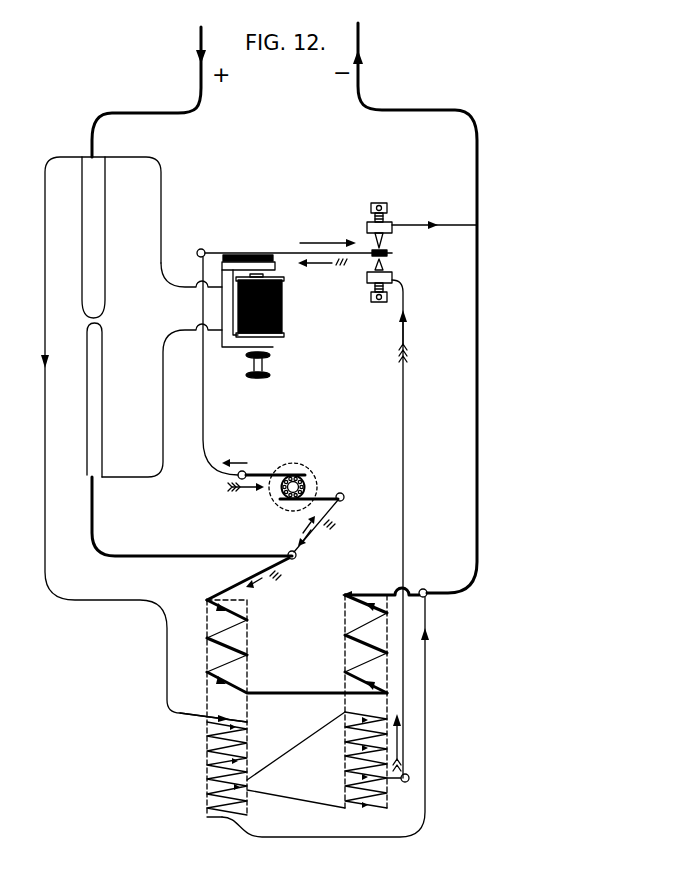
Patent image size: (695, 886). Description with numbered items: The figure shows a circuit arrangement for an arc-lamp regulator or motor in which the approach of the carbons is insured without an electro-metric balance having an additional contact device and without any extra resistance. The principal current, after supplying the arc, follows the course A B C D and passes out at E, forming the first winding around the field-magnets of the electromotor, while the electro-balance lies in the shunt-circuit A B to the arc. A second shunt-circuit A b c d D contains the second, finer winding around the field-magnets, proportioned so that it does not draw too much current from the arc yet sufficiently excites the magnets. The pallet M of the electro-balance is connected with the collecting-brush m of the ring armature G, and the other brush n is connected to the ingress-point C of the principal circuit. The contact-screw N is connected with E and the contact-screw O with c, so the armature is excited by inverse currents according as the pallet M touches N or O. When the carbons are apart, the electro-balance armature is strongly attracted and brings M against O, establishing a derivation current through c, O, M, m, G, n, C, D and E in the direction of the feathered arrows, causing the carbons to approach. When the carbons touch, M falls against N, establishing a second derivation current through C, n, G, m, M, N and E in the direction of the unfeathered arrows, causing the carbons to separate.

The principal circuit point A is at (86, 225).
The principal circuit point B is at (189, 439).
The ingress-point of the principal circuit C is at (259, 575).
The principal circuit point D is at (325, 702).
The egress-point of the principal circuit E is at (443, 224).
The ring armature G is at (300, 487).
The pallet of the electro-balance M is at (294, 353).
The contact-screw N is at (367, 229).
The contact-screw O is at (375, 518).
The collecting-brush m is at (263, 474).
The brush n is at (315, 522).
The shunt-circuit point b is at (213, 711).
The shunt-circuit point c is at (398, 788).
The shunt-circuit point d is at (205, 826).